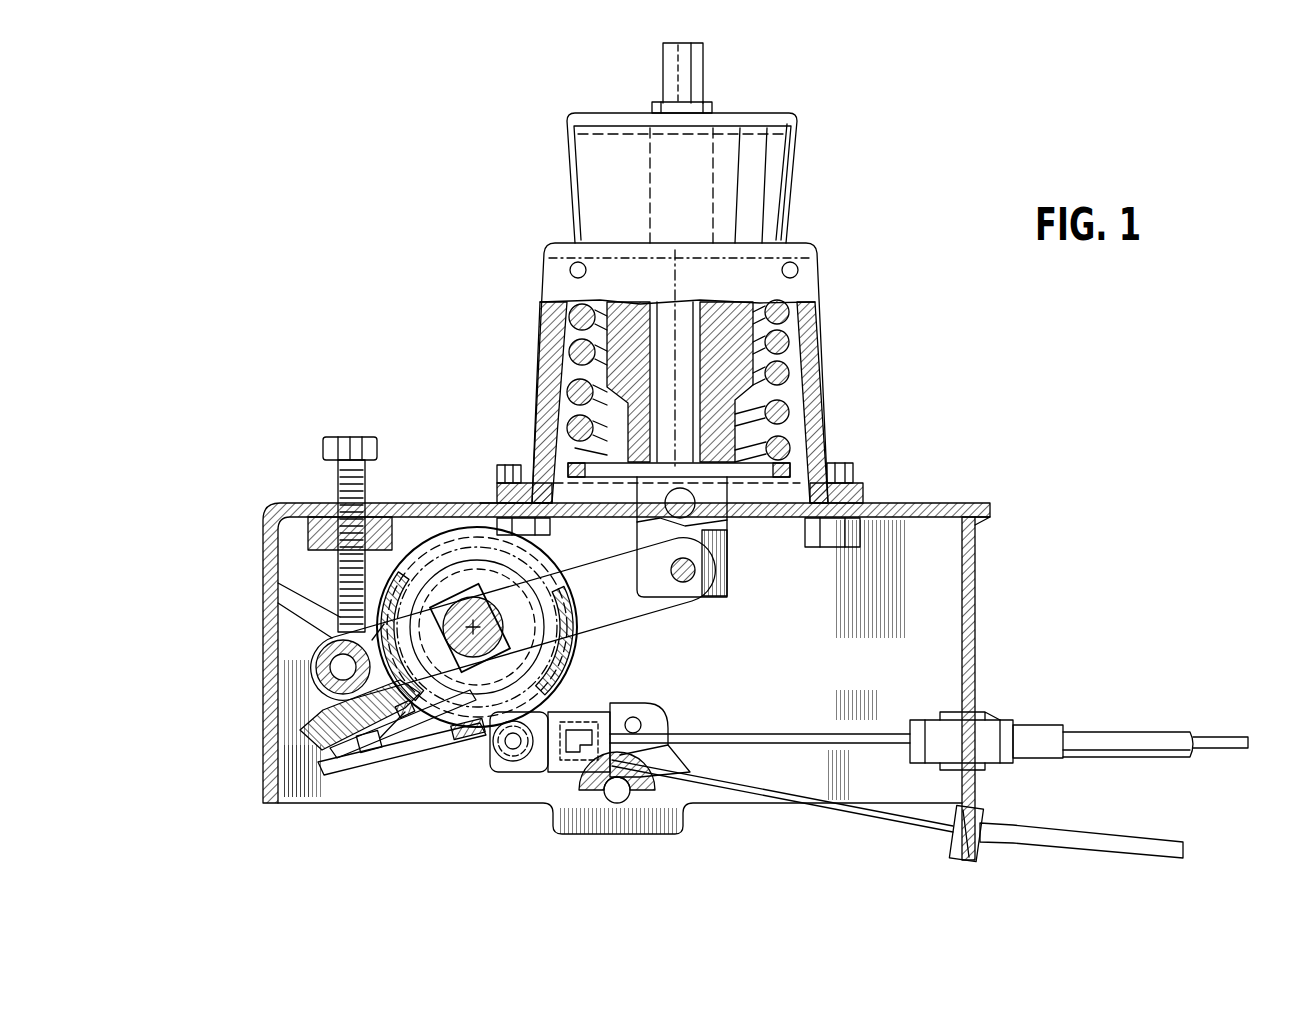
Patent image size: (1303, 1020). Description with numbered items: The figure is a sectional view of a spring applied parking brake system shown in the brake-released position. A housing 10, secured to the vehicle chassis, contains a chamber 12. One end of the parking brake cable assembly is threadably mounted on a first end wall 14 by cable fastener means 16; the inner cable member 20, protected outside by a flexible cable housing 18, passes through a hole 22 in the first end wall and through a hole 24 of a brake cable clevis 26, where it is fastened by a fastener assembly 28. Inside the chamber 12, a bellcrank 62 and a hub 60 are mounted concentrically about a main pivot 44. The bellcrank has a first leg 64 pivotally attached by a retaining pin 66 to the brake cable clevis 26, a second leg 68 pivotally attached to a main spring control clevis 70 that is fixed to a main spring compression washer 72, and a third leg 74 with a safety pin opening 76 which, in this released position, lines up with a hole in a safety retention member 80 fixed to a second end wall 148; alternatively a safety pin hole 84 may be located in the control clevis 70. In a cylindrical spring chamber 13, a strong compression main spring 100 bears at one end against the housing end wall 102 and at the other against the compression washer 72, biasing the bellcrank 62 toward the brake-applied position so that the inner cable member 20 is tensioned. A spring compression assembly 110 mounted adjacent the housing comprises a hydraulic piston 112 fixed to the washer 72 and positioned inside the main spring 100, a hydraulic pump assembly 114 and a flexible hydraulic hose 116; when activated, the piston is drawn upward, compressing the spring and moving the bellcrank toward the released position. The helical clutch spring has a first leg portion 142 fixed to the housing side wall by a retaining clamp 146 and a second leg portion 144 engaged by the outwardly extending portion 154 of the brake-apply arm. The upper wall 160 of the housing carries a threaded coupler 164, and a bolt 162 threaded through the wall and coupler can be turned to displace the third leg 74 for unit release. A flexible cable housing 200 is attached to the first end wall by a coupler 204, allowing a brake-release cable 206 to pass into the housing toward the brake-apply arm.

The housing 10 is at (267, 547).
The chamber 12 is at (930, 590).
The cylindrical spring chamber 13 is at (790, 400).
The first end wall 14 is at (970, 630).
The cable fastener means 16 is at (945, 768).
The flexible cable housing 18 is at (1130, 730).
The inner cable member 20 is at (762, 733).
The hole 22 is at (975, 700).
The hole 24 is at (617, 805).
The brake cable clevis 26 is at (610, 708).
The fastener assembly 28 is at (568, 838).
The main pivot 44 is at (560, 575).
The hub 60 is at (381, 590).
The bellcrank 62 is at (575, 663).
The first leg 64 is at (445, 745).
The retaining pin 66 is at (500, 760).
The second leg 68 is at (632, 605).
The main spring control clevis 70 is at (728, 590).
The main spring compression washer 72 is at (725, 482).
The third leg 74 is at (340, 632).
The safety pin opening 76 is at (332, 660).
The safety retention member 80 is at (290, 607).
The safety pin hole 84 is at (697, 503).
The main spring 100 is at (810, 340).
The housing end wall 102 is at (542, 278).
The spring compression assembly 110 is at (550, 207).
The hydraulic piston 112 is at (660, 372).
The hydraulic pump assembly 114 is at (765, 113).
The flexible hydraulic hose 116 is at (703, 72).
The first leg portion 142 is at (688, 775).
The second leg portion 144 is at (355, 770).
The retaining clamp 146 is at (655, 720).
The second end wall 148 is at (283, 780).
The outwardly extending portion 154 is at (325, 780).
The upper wall 160 is at (480, 503).
The bolt 162 is at (335, 490).
The threaded coupler 164 is at (267, 528).
The flexible cable housing 200 is at (1105, 835).
The coupler 204 is at (948, 848).
The brake-release cable 206 is at (838, 805).